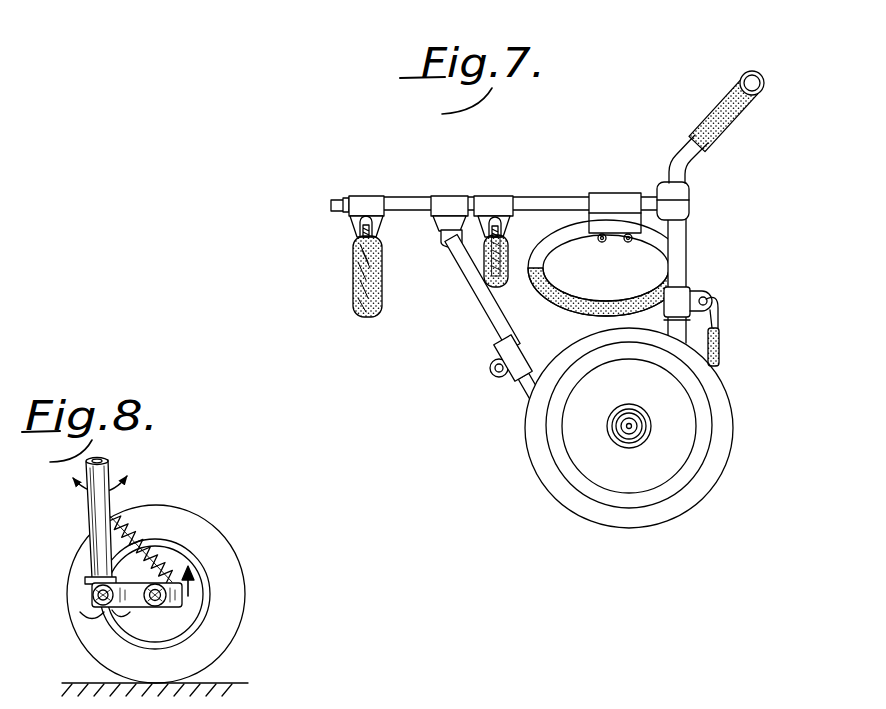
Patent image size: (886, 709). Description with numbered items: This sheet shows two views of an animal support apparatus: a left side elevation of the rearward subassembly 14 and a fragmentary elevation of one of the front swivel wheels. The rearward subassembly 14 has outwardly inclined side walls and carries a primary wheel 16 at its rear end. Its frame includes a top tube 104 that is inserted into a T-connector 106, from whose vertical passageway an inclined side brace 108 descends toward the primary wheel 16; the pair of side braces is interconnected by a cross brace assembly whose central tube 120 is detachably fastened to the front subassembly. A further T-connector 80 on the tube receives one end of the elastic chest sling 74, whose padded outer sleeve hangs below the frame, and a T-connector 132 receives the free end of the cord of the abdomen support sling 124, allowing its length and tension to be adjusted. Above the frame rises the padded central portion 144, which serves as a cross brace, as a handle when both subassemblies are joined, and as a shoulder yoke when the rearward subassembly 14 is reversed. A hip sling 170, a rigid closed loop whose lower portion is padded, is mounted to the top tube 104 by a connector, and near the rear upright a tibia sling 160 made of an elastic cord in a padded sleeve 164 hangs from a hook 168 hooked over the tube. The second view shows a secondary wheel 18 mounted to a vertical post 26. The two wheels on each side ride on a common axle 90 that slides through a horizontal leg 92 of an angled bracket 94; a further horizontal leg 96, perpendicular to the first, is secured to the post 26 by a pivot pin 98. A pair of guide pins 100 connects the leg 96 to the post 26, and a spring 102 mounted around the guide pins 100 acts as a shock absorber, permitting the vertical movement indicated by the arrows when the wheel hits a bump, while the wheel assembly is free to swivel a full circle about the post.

In FIG. 7, the rearward subassembly 14 is at (306, 172).
In FIG. 7, the primary wheels 16 is at (575, 447).
In FIG. 8, the secondary wheels 18 is at (233, 602).
In FIG. 8, the post 26 is at (97, 508).
In FIG. 7, the chest sling 74 is at (386, 292).
In FIG. 7, the T-connector 80 is at (370, 205).
In FIG. 8, the common axle 90 is at (160, 603).
In FIG. 8, the horizontal leg 92 is at (183, 603).
In FIG. 8, the angled bracket 94 is at (78, 577).
In FIG. 8, the horizontal leg 96 is at (112, 606).
In FIG. 8, the pivot pin 98 is at (93, 597).
In FIG. 8, the guide pins 100 is at (147, 510).
In FIG. 8, the spring 102 is at (167, 567).
In FIG. 7, the top tubes 104 is at (558, 207).
In FIG. 7, the T-connector 106 is at (448, 205).
In FIG. 7, the side brace 108 is at (497, 327).
In FIG. 7, the central tube 120 is at (492, 368).
In FIG. 7, the abdomen support sling 124 is at (506, 270).
In FIG. 7, the T-connector 132 is at (498, 207).
In FIG. 7, the central portion 144 is at (719, 112).
In FIG. 7, the tibia sling 160 is at (718, 360).
In FIG. 7, the padded sleeve 164 is at (716, 338).
In FIG. 7, the hook 168 is at (716, 296).
In FIG. 7, the hip sling 170 is at (575, 316).